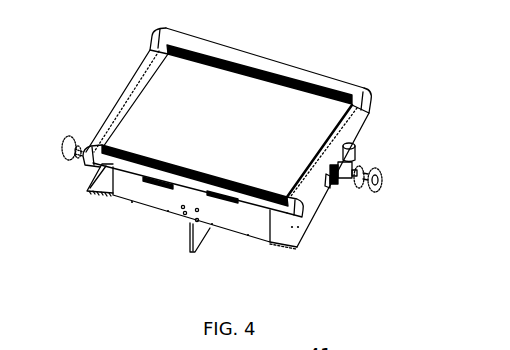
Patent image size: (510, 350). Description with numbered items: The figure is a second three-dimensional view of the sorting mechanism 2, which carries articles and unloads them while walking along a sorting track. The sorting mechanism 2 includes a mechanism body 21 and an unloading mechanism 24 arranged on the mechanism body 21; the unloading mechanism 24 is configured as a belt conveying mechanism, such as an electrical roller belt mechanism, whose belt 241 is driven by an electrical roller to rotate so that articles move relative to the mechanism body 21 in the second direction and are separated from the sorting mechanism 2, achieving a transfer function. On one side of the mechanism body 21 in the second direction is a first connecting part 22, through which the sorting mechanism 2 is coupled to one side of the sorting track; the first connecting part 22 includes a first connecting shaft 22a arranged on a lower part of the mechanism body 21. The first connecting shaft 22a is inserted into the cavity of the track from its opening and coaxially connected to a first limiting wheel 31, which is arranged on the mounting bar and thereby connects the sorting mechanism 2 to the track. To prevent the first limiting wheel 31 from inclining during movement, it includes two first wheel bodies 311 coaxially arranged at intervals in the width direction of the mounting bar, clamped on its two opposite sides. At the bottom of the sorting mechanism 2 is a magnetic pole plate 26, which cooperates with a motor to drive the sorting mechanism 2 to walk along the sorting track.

The sorting mechanism 2 is at (222, 34).
The mechanism body 21 is at (143, 198).
The first connecting part 22 is at (342, 178).
The first connecting shaft 22a is at (353, 165).
The unloading mechanism 24 is at (141, 87).
The belt 241 is at (237, 100).
The magnetic pole plate 26 is at (202, 235).
The first limiting wheel 31 is at (66, 140).
The first wheel body 311 is at (376, 185).